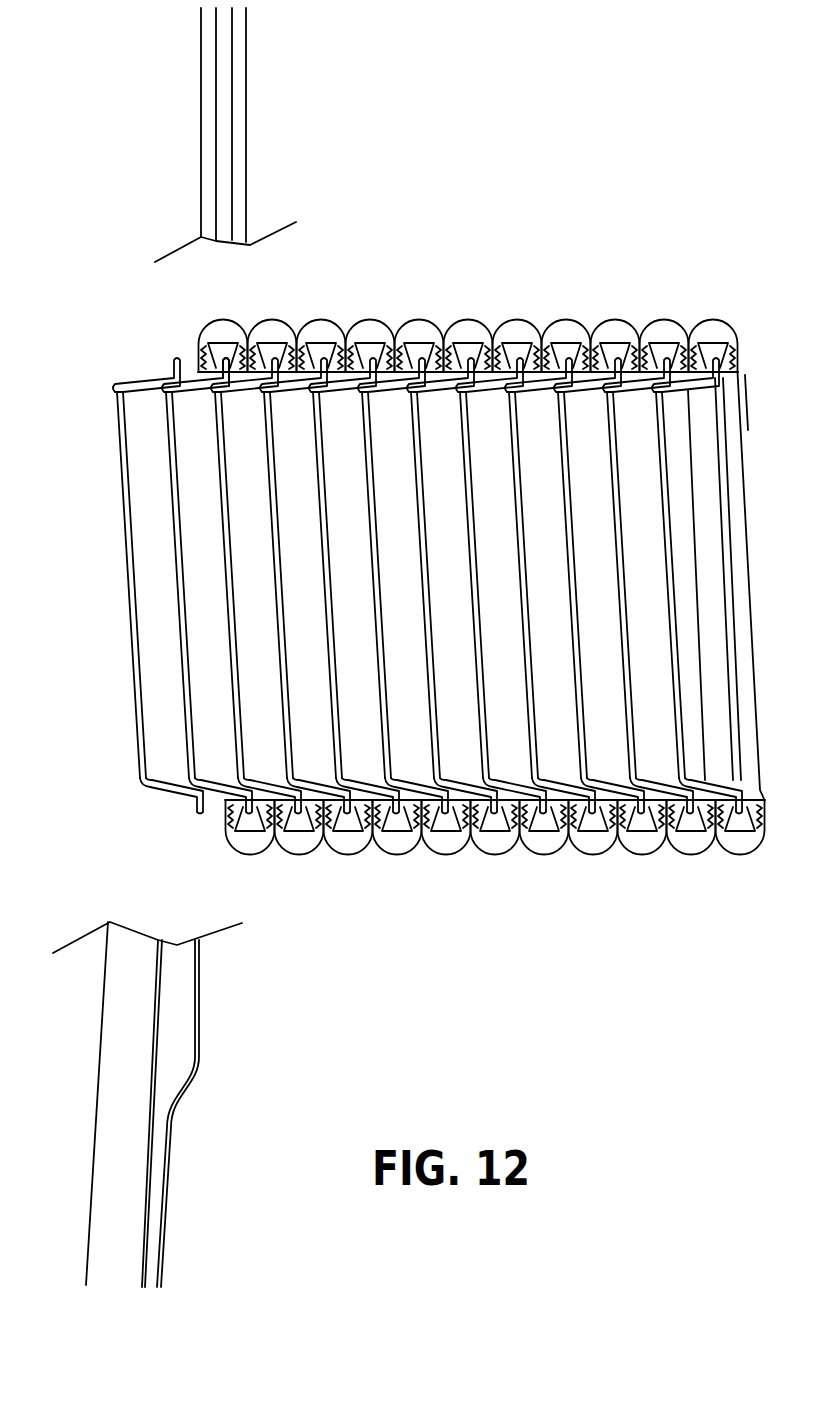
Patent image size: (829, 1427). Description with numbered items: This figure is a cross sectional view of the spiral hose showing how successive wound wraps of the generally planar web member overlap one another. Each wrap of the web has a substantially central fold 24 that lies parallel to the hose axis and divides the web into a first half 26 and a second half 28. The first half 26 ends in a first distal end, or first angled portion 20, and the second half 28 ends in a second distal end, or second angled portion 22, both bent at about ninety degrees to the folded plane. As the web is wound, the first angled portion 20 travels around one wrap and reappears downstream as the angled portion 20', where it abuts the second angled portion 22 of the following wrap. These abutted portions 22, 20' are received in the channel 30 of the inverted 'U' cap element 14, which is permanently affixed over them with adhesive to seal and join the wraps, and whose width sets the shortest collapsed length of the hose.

The cap element 14 is at (218, 325).
The channel 30 is at (230, 347).
The first distal end 20 is at (117, 789).
The downstream first angled portion 20' is at (199, 620).
The second distal end 22 is at (220, 373).
The central fold 24 is at (117, 392).
The first half 26 is at (132, 382).
The second half 28 is at (140, 789).